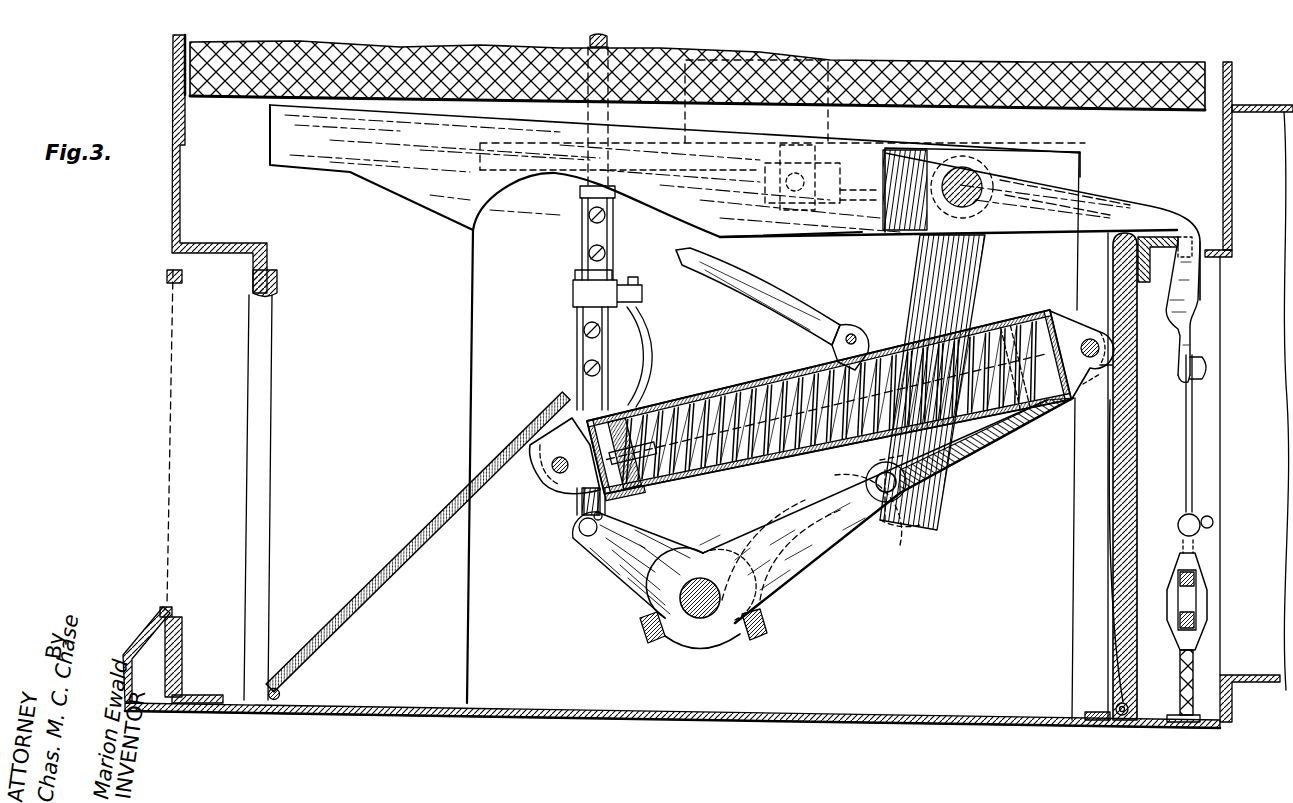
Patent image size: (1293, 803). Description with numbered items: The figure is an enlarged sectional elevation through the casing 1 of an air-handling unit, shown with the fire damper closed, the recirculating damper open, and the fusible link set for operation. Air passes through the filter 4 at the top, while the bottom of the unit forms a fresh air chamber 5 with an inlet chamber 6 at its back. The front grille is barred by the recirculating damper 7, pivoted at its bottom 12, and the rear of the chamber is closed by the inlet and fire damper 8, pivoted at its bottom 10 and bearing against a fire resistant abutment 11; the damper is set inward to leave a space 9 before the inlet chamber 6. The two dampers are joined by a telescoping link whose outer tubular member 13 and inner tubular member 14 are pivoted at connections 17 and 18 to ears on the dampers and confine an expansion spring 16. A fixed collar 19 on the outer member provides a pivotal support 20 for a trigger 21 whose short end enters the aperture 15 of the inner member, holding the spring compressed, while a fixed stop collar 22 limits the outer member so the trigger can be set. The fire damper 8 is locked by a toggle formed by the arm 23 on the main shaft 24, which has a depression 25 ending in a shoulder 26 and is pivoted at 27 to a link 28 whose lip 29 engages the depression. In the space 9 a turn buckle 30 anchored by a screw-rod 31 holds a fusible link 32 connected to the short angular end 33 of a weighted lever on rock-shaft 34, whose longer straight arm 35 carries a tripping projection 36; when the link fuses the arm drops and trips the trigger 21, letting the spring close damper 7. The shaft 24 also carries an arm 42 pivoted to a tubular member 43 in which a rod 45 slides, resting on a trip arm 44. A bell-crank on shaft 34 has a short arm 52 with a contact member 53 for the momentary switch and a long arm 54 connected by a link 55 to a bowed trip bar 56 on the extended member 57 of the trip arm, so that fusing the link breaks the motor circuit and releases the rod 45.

The casing 1 is at (183, 52).
The filter 4 is at (238, 97).
The fresh air chamber 5 is at (933, 615).
The inlet chamber 6 is at (1272, 110).
The recirculating damper 7 is at (405, 572).
The inlet and fire damper 8 is at (1110, 580).
The space 9 is at (1132, 436).
The pivot of damper 8 10 is at (1120, 724).
The fire resistant abutment 11 is at (1200, 276).
The pivot of damper 7 12 is at (277, 708).
The outer tubular member 13 is at (729, 392).
The inner tubular member 14 is at (696, 473).
The slot or aperture 15 is at (770, 386).
The expansion spring 16 is at (800, 468).
The pivotal connection 17 is at (550, 463).
The pivotal connection 18 is at (1100, 372).
The fixed collar 19 is at (858, 462).
The pivotal support 20 is at (850, 330).
The trigger 21 is at (786, 320).
The fixed stop collar 22 is at (624, 496).
The arm 23 is at (790, 580).
The main or operating shaft 24 is at (718, 620).
The depression 25 is at (830, 553).
The shoulder 26 is at (875, 530).
The pivot 27 is at (906, 485).
The link 28 is at (972, 438).
The lip 29 is at (905, 520).
The turn buckle 30 is at (1206, 604).
The screw-rod 31 is at (1180, 680).
The fusible link 32 is at (1195, 455).
The short angular end 33 is at (1196, 328).
The rock-shaft 34 is at (965, 178).
The longer straight arm 35 is at (392, 166).
The tripping projection 36 is at (718, 236).
The arm 42 is at (620, 578).
The tubular member 43 is at (576, 503).
The trip arm 44 is at (576, 283).
The rod or telescoping member 45 is at (612, 42).
The short arm of bell-crank lever 52 is at (875, 165).
The fixed contact member 53 is at (794, 158).
The long arm of bell-crank 54 is at (930, 264).
The link 55 is at (676, 400).
The trip bar 56 is at (647, 350).
The extended member 57 is at (642, 294).